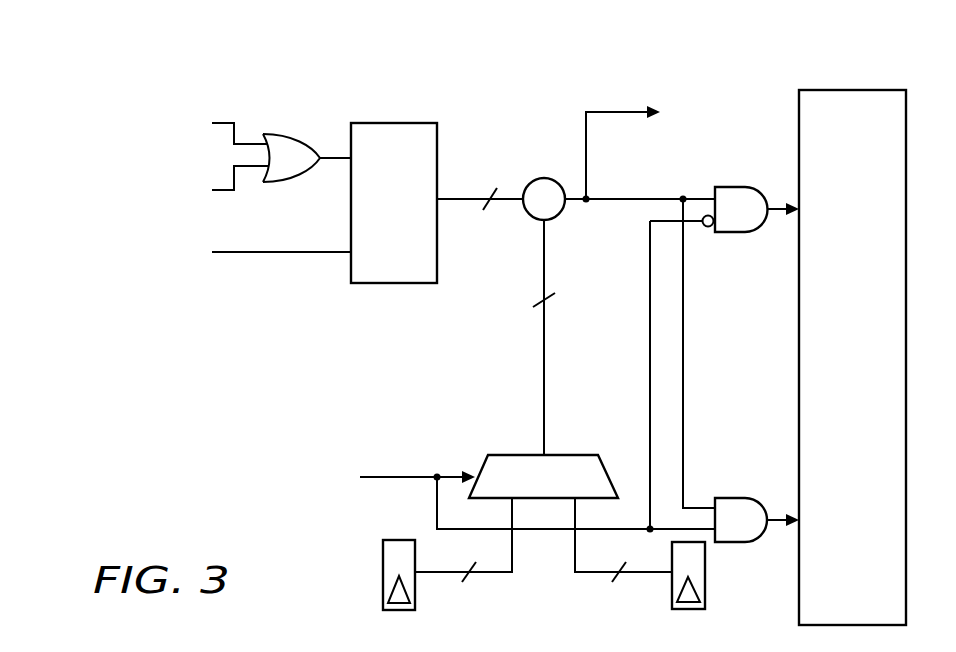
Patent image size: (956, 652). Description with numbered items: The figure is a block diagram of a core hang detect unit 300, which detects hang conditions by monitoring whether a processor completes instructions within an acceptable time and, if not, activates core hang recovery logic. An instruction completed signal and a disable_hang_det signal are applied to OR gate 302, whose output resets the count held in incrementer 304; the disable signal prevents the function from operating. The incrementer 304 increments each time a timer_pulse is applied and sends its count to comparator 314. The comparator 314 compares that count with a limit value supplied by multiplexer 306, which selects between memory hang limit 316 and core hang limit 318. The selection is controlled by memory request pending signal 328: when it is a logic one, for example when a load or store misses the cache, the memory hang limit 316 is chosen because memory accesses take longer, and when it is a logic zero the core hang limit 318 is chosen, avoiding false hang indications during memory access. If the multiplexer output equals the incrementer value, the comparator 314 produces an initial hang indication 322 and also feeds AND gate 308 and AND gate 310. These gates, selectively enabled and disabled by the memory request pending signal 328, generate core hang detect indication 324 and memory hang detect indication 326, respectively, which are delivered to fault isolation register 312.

The core hang detect unit 300 is at (114, 64).
The OR gate 302 is at (270, 133).
The incrementer 304 is at (413, 263).
The multiplexer 306 is at (580, 455).
The AND gate 308 is at (731, 233).
The AND gate 310 is at (731, 497).
The fault isolation register 312 is at (832, 412).
The comparator 314 is at (543, 178).
The memory hang limit 316 is at (383, 582).
The core hang limit 318 is at (705, 583).
The initial hang indication 322 is at (616, 111).
The core hang detect indication 324 is at (853, 182).
The memory hang detect indication 326 is at (850, 542).
The memory request pending signal 328 is at (393, 475).